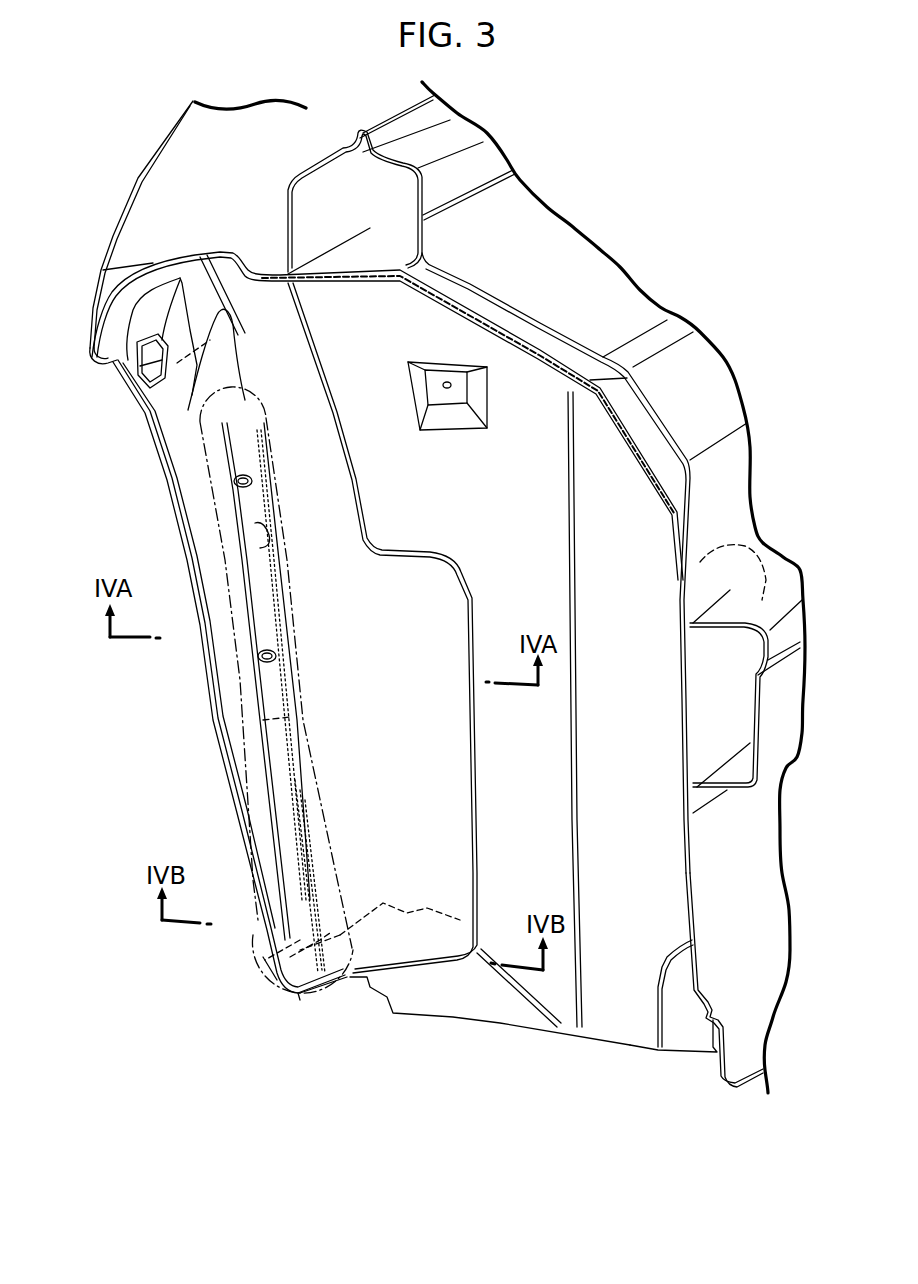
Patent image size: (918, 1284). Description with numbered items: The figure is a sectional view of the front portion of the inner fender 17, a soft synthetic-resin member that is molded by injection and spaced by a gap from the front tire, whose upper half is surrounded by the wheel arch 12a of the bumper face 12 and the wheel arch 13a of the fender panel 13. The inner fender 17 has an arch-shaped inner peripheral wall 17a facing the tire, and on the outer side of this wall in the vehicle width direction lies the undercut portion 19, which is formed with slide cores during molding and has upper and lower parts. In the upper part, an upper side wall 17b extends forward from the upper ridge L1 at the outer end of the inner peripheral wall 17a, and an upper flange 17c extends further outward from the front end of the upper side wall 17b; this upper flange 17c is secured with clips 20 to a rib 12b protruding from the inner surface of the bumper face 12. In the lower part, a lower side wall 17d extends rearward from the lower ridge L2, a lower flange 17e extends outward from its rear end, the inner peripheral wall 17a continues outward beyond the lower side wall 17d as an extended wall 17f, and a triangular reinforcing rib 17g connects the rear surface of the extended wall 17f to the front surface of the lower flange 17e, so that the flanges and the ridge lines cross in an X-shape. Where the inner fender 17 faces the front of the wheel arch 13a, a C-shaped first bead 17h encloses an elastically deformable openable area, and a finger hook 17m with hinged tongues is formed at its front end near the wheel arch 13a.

The bumper face 12 is at (205, 738).
The wheel arch 12a is at (178, 522).
The rib 12b is at (263, 493).
The fender panel 13 is at (138, 177).
The wheel arch 13a is at (125, 370).
The inner fender 17 is at (462, 1035).
The inner peripheral wall 17a is at (520, 460).
The upper side wall 17b is at (270, 548).
The upper flange 17c is at (257, 590).
The lower side wall 17d is at (313, 975).
The lower flange 17e is at (277, 933).
The extended wall 17f is at (280, 1005).
The reinforcing rib 17g is at (343, 935).
The first bead 17h is at (205, 365).
The finger hook 17m is at (150, 330).
The undercut portion 19 is at (313, 658).
The clips 20 is at (235, 482).
The upper ridge L1 is at (276, 610).
The lower ridge L2 is at (307, 863).